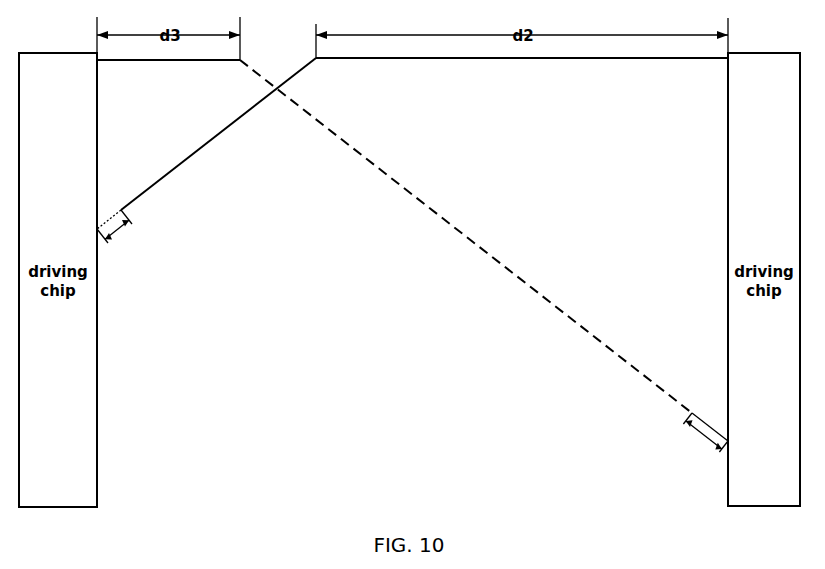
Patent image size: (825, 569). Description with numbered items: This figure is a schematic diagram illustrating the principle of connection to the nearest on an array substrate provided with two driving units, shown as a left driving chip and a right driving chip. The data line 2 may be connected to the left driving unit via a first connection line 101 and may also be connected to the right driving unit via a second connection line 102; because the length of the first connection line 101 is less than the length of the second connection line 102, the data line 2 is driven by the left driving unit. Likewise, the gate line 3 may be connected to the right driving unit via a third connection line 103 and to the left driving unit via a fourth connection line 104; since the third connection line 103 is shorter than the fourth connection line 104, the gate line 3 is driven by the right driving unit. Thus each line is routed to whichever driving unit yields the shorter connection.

The data line 2 is at (177, 164).
The gate line 3 is at (418, 200).
The first connection line 101 is at (112, 215).
The second connection line 102 is at (472, 58).
The third connection line 103 is at (707, 424).
The fourth connection line 104 is at (178, 60).